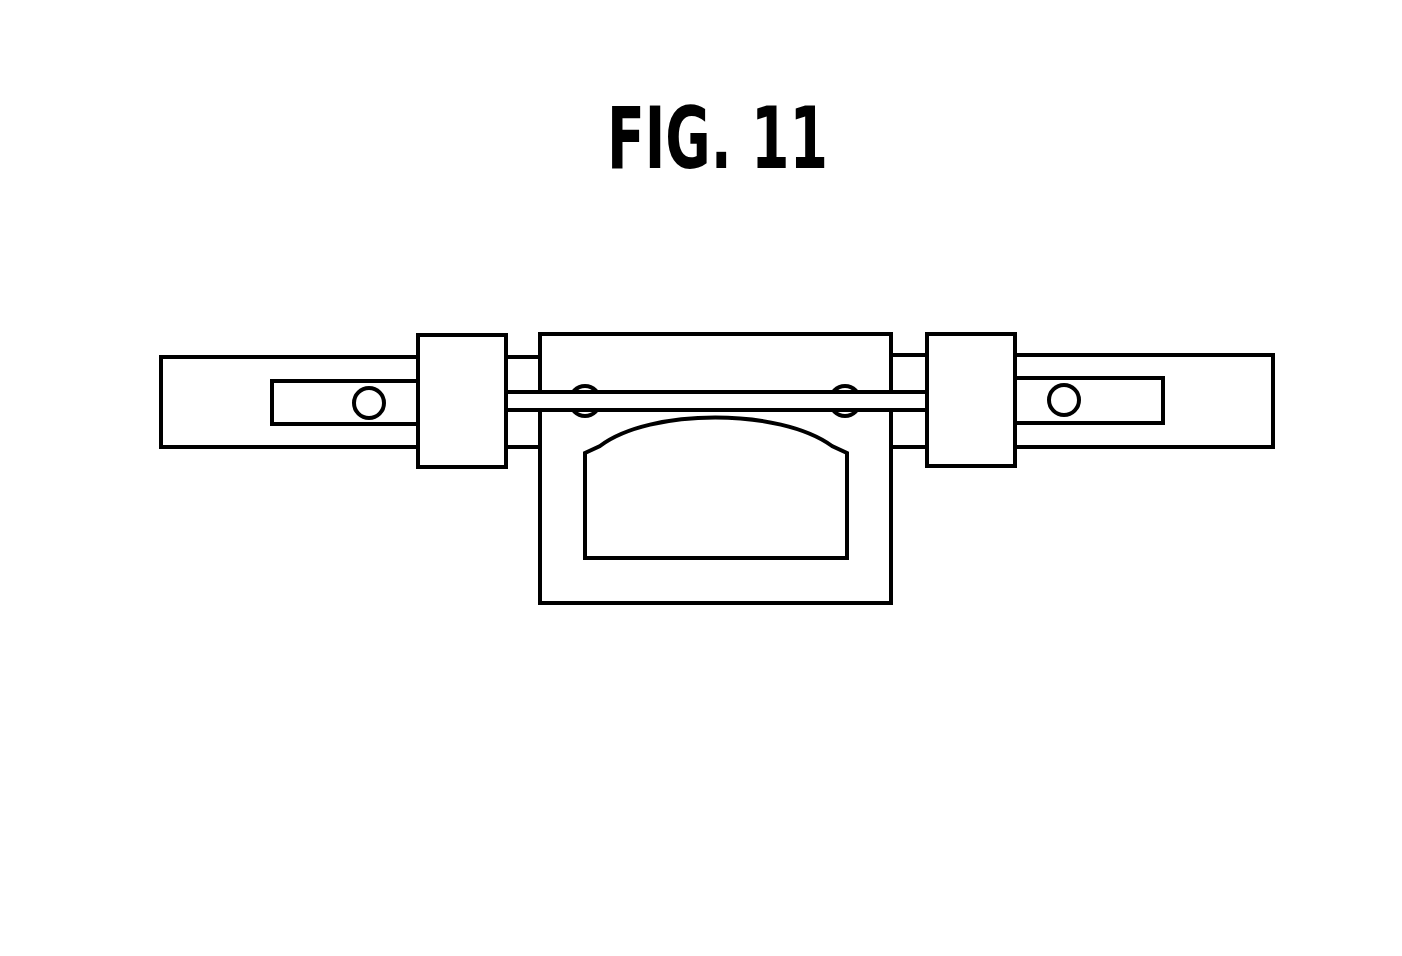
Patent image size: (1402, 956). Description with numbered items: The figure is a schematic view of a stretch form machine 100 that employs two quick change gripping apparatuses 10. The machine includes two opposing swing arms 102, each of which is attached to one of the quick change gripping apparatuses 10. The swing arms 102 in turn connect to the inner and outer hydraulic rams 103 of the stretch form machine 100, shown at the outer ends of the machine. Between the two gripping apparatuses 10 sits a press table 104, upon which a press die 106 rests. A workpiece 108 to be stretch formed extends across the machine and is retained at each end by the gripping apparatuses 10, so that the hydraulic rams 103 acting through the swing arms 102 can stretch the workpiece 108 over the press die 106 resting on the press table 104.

The quick change gripping apparatus 10 is at (492, 333).
The stretch form machine 100 is at (1127, 203).
The swing arm 102 is at (305, 425).
The inner and outer hydraulic rams 103 is at (180, 397).
The press table 104 is at (579, 585).
The press die 106 is at (687, 538).
The workpiece 108 is at (822, 413).